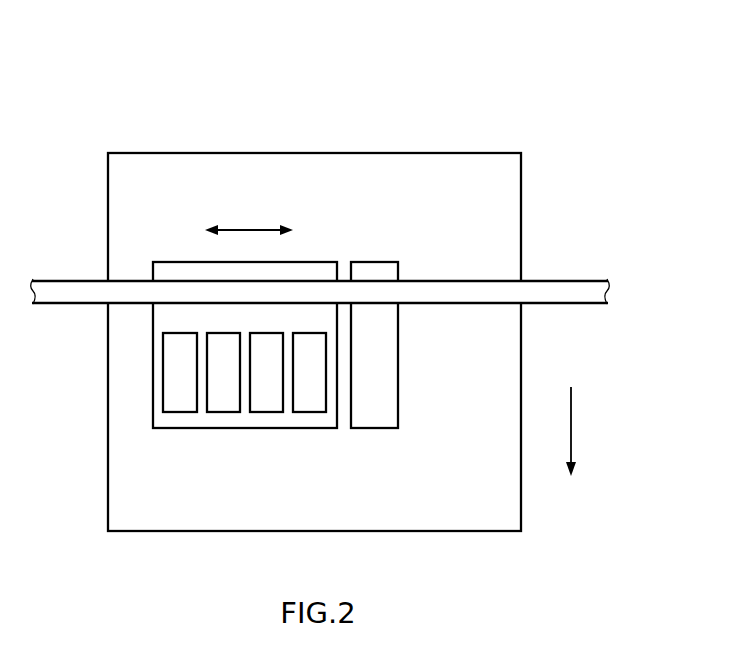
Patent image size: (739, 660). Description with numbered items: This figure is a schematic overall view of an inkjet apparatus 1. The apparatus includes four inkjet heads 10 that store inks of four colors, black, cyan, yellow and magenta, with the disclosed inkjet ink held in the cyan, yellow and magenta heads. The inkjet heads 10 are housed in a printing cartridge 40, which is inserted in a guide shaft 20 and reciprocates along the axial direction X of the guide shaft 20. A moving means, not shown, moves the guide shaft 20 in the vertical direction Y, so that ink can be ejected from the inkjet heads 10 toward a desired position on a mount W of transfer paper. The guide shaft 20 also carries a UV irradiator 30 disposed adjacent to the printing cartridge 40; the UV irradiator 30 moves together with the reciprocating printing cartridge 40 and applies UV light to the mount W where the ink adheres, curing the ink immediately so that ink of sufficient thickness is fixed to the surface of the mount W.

The inkjet apparatus 1 is at (560, 91).
The mount W is at (507, 177).
The guide shaft 20 is at (565, 287).
The printing cartridge 40 is at (312, 272).
The UV irradiator 30 is at (388, 352).
The inkjet heads 10 is at (180, 412).